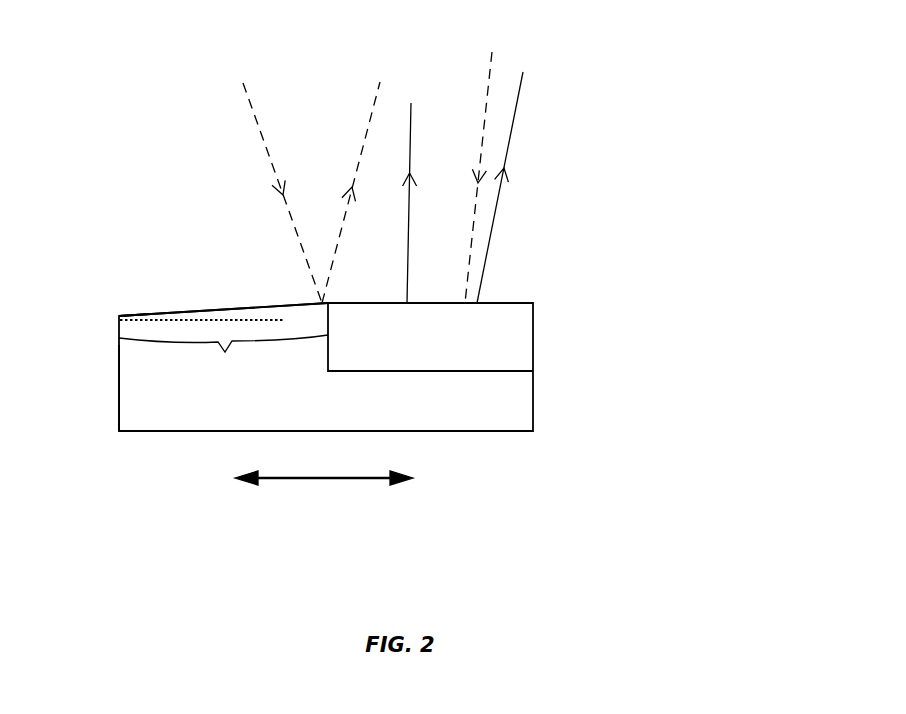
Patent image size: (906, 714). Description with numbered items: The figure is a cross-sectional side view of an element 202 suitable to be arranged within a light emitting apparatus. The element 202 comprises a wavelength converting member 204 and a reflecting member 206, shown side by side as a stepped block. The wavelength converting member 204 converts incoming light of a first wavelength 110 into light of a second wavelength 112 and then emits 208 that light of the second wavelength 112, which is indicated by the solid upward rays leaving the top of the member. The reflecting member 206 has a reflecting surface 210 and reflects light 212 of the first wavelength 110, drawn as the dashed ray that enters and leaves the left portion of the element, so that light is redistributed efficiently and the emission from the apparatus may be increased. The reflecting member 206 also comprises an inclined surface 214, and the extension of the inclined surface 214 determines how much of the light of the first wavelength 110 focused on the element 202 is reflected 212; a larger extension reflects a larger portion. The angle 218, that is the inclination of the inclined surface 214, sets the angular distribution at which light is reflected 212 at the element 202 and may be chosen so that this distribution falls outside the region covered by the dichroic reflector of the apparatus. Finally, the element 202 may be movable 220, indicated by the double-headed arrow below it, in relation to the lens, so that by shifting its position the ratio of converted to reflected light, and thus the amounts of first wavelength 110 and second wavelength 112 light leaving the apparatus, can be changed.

The light of a first wavelength 110 is at (258, 157).
The light of a second wavelength 112 is at (411, 128).
The element 202 is at (667, 244).
The wavelength converting member 204 is at (522, 333).
The reflecting member 206 is at (140, 357).
The emission of light of the second wavelength 208 is at (522, 203).
The reflecting surface 210 is at (177, 312).
The reflected light 212 is at (365, 145).
The inclined surface 214 is at (140, 315).
The angle 218 is at (287, 303).
The movement 220 is at (320, 480).